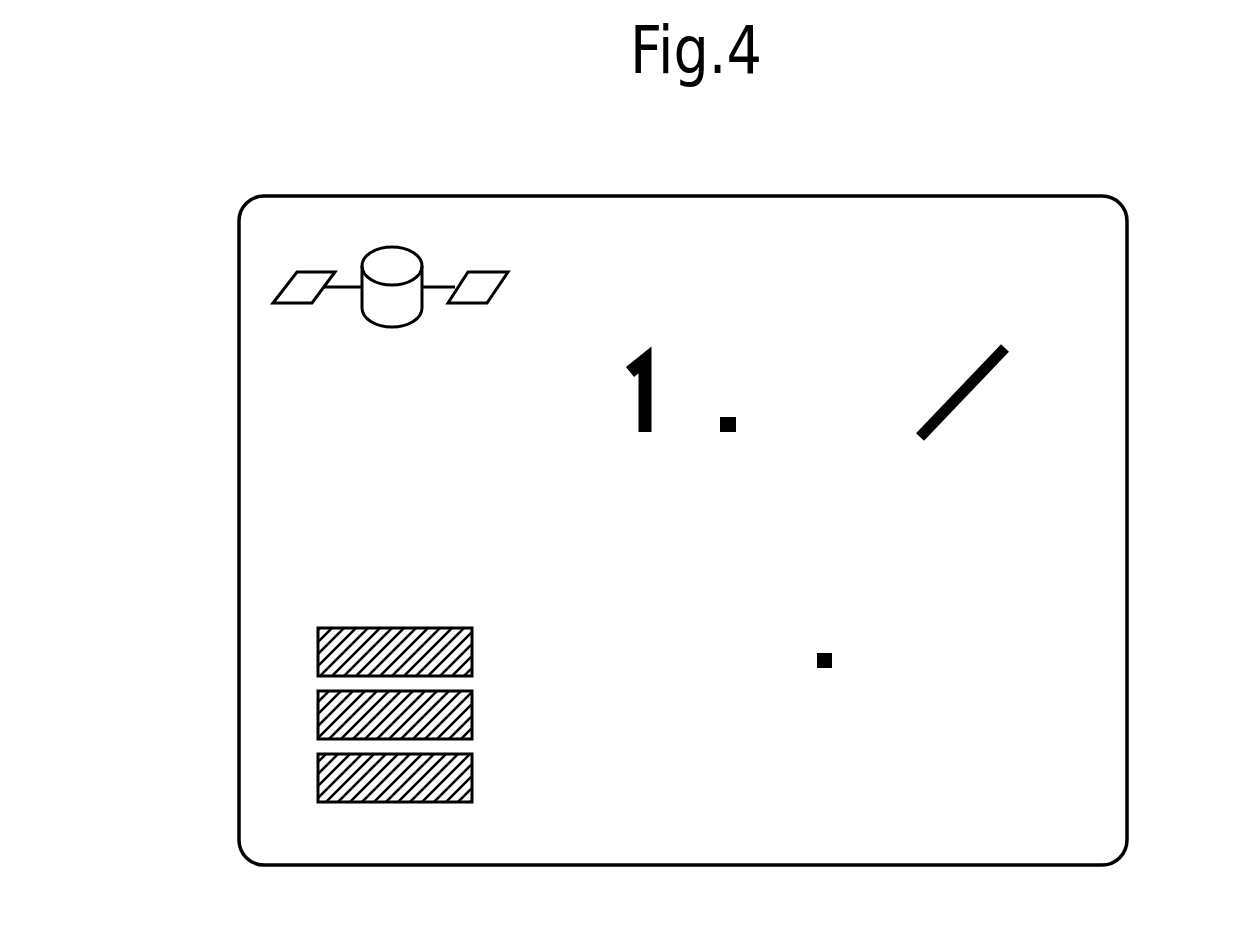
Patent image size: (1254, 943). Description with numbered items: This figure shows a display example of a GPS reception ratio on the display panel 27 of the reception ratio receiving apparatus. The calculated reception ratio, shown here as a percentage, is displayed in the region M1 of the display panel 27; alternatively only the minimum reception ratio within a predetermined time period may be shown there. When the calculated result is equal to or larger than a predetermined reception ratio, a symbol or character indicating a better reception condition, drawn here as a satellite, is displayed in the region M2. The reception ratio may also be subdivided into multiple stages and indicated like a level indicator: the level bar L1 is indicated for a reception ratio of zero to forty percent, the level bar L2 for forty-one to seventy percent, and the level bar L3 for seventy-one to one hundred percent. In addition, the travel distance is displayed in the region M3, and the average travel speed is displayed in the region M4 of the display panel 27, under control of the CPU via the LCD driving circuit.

The display panel 27 is at (1022, 196).
The region M1 is at (353, 380).
The region M2 is at (382, 256).
The region M3 is at (1078, 397).
The region M4 is at (1073, 627).
The level bar L1 is at (332, 776).
The level bar L2 is at (332, 713).
The level bar L3 is at (332, 650).